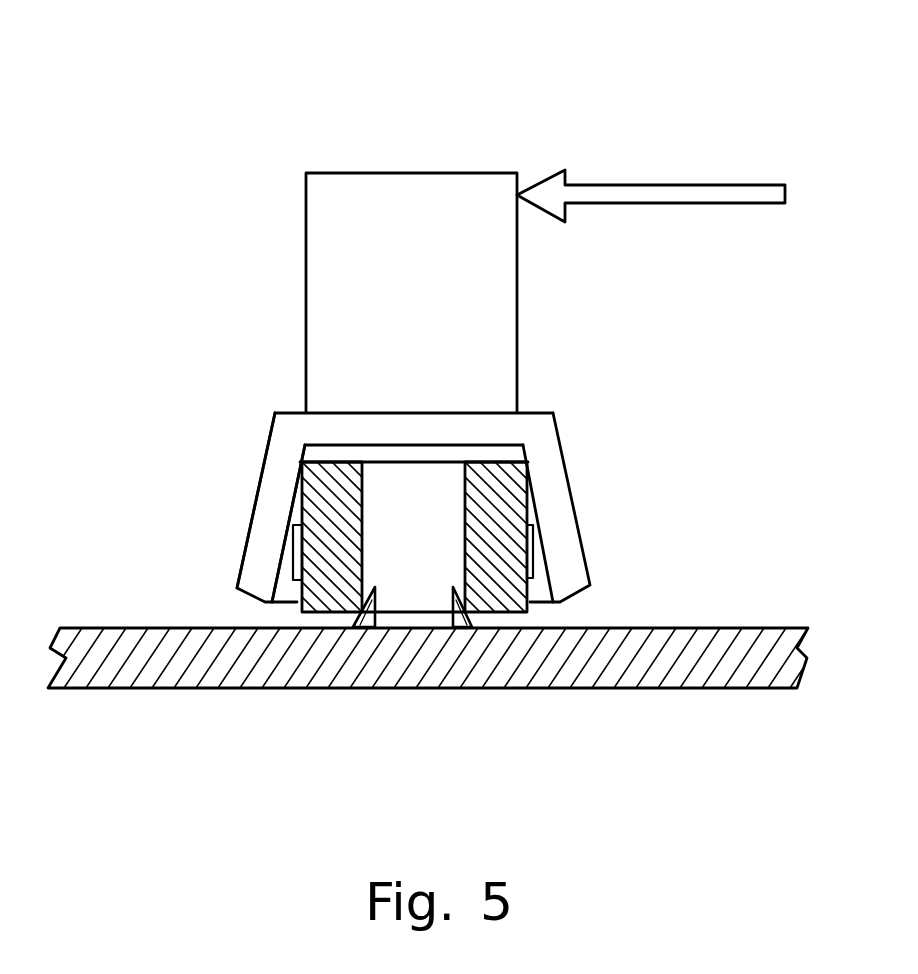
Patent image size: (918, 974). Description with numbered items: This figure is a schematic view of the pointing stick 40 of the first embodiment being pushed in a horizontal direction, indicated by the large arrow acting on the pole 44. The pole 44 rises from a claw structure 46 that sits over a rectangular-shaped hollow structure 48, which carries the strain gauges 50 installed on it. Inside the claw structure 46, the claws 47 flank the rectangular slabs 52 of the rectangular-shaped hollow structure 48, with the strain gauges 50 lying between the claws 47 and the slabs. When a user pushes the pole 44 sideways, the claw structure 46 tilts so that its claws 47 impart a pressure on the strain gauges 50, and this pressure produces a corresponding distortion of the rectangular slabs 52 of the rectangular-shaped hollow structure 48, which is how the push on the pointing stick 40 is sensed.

The pointing stick 40 is at (548, 62).
The pole 44 is at (447, 173).
The claw structure 46 is at (262, 392).
The claws 47 is at (273, 515).
The rectangular-shaped hollow structure 48 is at (507, 455).
The strain gauges 50 is at (297, 546).
The rectangular slabs 52 is at (330, 500).